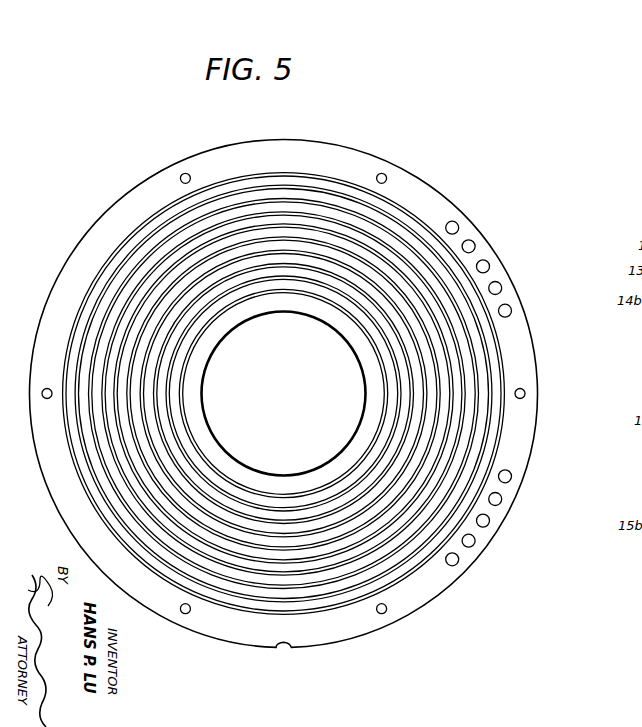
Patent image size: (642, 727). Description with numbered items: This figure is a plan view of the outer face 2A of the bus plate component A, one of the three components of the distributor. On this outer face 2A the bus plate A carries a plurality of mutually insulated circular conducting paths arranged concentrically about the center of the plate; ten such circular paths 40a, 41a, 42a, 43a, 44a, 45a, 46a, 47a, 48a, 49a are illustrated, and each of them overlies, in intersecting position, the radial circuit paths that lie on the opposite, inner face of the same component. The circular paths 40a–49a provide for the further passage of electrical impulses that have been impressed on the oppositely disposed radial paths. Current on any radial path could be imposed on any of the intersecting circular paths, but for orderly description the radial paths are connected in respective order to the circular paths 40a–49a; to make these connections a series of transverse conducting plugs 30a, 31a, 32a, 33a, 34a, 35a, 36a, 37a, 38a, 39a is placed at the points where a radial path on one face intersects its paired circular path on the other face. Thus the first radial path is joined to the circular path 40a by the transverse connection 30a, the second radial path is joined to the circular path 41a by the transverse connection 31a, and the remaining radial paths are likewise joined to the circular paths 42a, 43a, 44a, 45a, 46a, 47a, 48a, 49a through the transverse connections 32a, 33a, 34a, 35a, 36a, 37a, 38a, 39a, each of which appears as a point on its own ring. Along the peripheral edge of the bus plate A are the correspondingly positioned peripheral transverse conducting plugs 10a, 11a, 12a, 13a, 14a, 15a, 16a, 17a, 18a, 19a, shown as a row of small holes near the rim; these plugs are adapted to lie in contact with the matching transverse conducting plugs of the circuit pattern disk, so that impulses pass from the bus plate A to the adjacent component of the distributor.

The bus plate component A is at (324, 142).
The outer face of the bus plate 2A is at (358, 167).
The peripheral transverse conducting plug 10a is at (456, 222).
The peripheral transverse conducting plug 11a is at (473, 241).
The peripheral transverse conducting plug 12a is at (489, 264).
The peripheral transverse conducting plug 13a is at (502, 287).
The peripheral transverse conducting plug 14a is at (512, 310).
The peripheral transverse conducting plug 15a is at (511, 482).
The peripheral transverse conducting plug 16a is at (501, 504).
The peripheral transverse conducting plug 17a is at (489, 526).
The peripheral transverse conducting plug 18a is at (474, 546).
The peripheral transverse conducting plug 19a is at (457, 565).
The transverse conducting plug 30a is at (440, 240).
The transverse conducting plug 31a is at (443, 263).
The transverse conducting plug 32a is at (450, 287).
The transverse conducting plug 33a is at (460, 307).
The transverse conducting plug 34a is at (442, 335).
The transverse conducting plug 35a is at (428, 445).
The transverse conducting plug 36a is at (407, 455).
The transverse conducting plug 37a is at (393, 463).
The transverse conducting plug 38a is at (373, 465).
The transverse conducting plug 39a is at (355, 468).
The circular conducting path 40a is at (490, 345).
The circular conducting path 41a is at (478, 353).
The circular conducting path 42a is at (463, 363).
The circular conducting path 43a is at (458, 371).
The circular conducting path 44a is at (453, 378).
The circular conducting path 45a is at (440, 395).
The circular conducting path 46a is at (425, 410).
The circular conducting path 47a is at (412, 423).
The circular conducting path 48a is at (397, 435).
The circular conducting path 49a is at (378, 463).